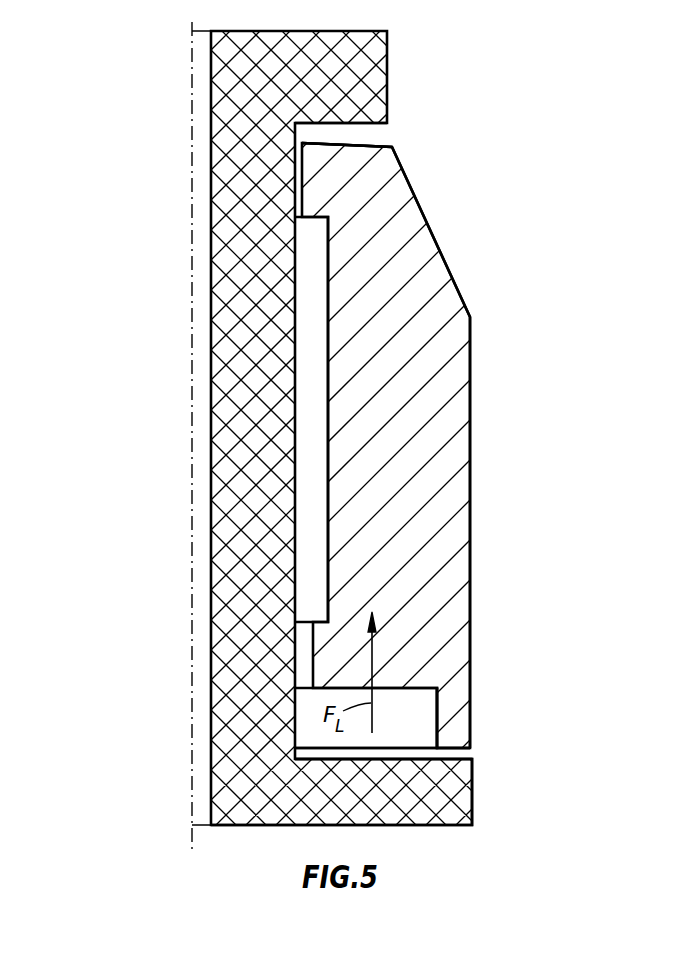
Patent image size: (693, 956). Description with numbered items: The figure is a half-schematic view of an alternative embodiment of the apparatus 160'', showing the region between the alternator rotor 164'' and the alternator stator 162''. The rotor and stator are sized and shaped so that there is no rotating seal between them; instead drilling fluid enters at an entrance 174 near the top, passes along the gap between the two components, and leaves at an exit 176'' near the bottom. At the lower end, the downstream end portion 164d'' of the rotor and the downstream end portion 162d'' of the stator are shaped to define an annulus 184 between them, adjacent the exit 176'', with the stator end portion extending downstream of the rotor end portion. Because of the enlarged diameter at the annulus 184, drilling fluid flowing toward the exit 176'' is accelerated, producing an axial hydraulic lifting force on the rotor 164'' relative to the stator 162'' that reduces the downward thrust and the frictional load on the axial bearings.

The apparatus 160'' is at (476, 445).
The alternator stator 162'' is at (280, 428).
The downstream end portion of the alternator stator 162d'' is at (421, 783).
The alternator rotor 164'' is at (457, 445).
The downstream end portion of the alternator rotor 164d'' is at (534, 703).
The entrance 174 is at (387, 138).
The exit 176'' is at (456, 736).
The annulus 184 is at (408, 722).